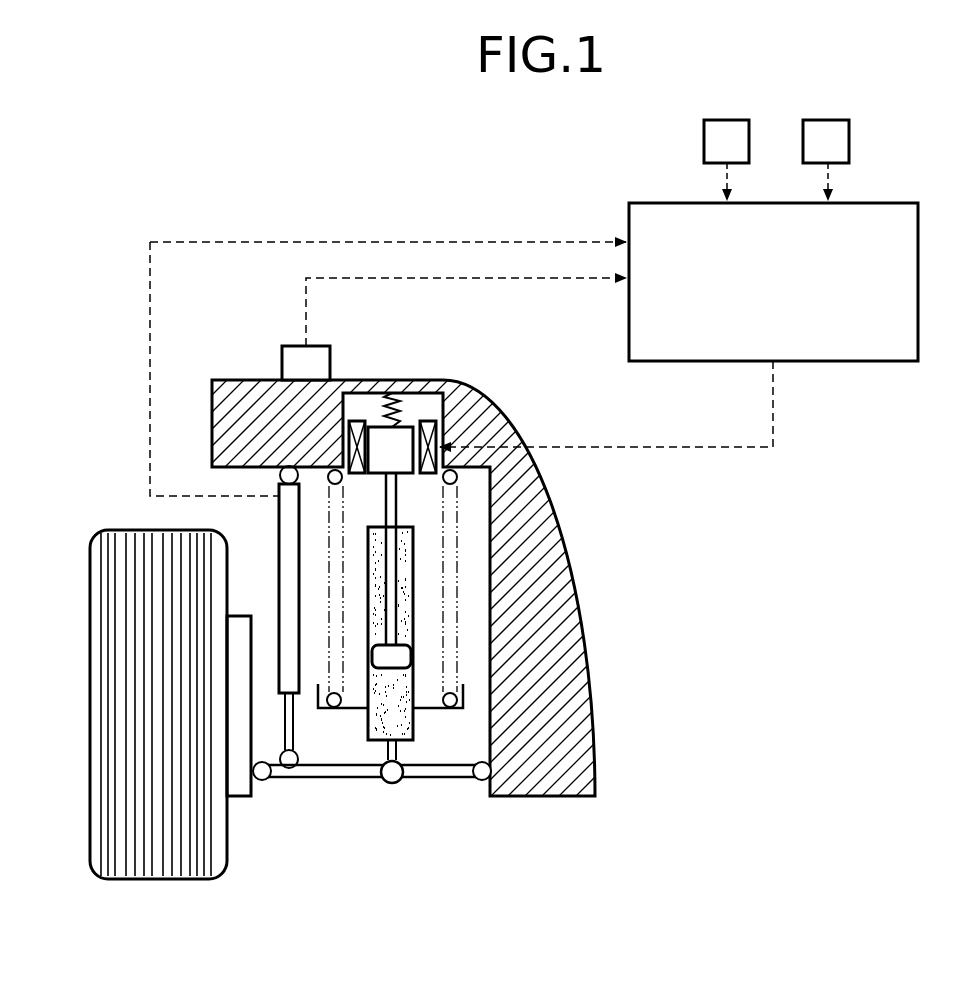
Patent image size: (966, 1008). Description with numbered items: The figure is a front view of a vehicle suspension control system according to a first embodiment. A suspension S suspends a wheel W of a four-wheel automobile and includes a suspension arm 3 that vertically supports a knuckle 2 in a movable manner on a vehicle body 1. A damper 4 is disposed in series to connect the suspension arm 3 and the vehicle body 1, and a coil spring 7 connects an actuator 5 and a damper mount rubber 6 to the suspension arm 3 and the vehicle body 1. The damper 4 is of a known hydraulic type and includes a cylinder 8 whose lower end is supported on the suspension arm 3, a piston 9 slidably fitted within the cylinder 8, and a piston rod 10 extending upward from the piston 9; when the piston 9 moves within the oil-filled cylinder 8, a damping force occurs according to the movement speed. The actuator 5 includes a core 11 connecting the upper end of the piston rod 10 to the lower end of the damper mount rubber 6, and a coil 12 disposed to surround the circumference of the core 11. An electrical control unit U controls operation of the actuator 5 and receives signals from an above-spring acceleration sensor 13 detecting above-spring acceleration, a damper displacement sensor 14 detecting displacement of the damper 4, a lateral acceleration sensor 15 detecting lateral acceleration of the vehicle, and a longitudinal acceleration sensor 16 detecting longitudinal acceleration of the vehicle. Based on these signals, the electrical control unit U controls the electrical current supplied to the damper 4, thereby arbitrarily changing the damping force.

The vehicle body 1 is at (245, 392).
The knuckle 2 is at (238, 628).
The suspension arm 3 is at (343, 774).
The damper 4 is at (364, 717).
The actuator 5 is at (382, 482).
The damper mount rubber 6 is at (398, 400).
The coil spring 7 is at (334, 486).
The cylinder 8 is at (415, 720).
The piston 9 is at (402, 655).
The piston rod 10 is at (394, 514).
The core 11 is at (379, 427).
The coil 12 is at (357, 440).
The above-spring acceleration sensor 13 is at (320, 356).
The damper displacement sensor 14 is at (283, 548).
The lateral acceleration sensor 15 is at (712, 156).
The longitudinal acceleration sensor 16 is at (811, 156).
The electrical control unit U is at (758, 293).
The wheel W is at (100, 540).
The suspension S is at (373, 787).